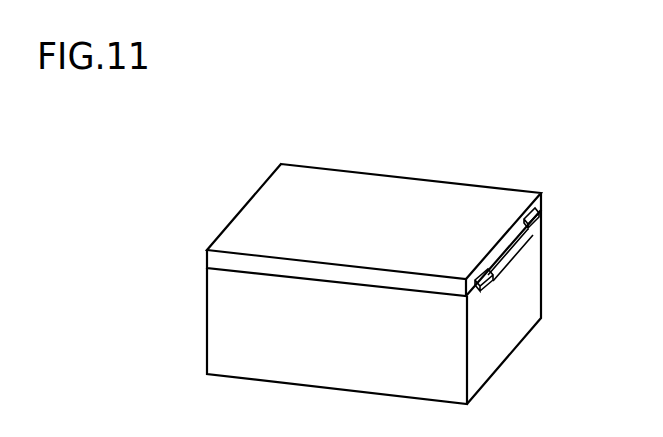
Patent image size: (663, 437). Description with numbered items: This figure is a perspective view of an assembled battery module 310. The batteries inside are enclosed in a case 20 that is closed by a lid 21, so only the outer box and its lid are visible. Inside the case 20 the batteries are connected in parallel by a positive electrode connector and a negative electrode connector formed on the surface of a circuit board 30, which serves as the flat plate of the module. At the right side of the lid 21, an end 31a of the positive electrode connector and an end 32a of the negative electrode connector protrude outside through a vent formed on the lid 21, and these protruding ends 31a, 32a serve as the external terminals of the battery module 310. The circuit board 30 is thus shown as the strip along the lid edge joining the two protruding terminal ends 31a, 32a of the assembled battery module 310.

The battery module 310 is at (534, 131).
The case 20 is at (505, 337).
The lid 21 is at (390, 192).
The circuit board 30 is at (507, 247).
The end of the positive electrode connector 31a is at (542, 217).
The end of the negative electrode connector 32a is at (503, 268).